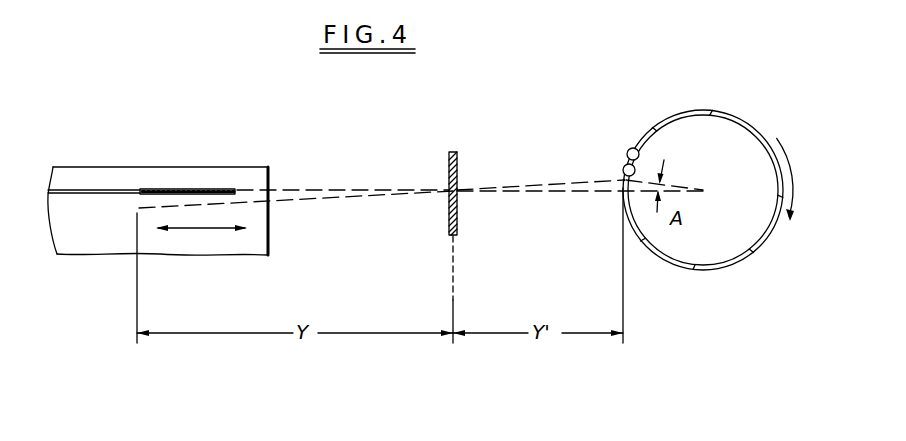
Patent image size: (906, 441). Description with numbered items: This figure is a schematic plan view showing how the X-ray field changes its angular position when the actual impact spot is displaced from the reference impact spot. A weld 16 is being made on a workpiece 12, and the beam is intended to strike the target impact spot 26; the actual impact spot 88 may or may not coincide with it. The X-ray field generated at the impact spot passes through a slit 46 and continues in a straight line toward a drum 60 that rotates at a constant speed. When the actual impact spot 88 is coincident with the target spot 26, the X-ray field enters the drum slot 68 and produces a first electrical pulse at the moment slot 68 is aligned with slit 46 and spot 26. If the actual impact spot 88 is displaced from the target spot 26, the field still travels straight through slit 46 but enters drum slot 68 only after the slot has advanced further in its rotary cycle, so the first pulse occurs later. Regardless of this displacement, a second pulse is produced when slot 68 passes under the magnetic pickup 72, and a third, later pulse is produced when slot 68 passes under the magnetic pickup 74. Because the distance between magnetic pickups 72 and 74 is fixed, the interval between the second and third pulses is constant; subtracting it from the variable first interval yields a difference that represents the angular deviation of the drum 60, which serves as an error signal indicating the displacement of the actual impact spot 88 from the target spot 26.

The workpiece 12 is at (188, 166).
The target impact spot 26 is at (141, 190).
The weld 16 is at (215, 189).
The actual impact spot 88 is at (139, 208).
The slit 46 is at (449, 190).
The drum 60 is at (754, 130).
The drum slot 68 is at (625, 179).
The magnetic pickup 72 is at (624, 167).
The magnetic pickup 74 is at (630, 149).